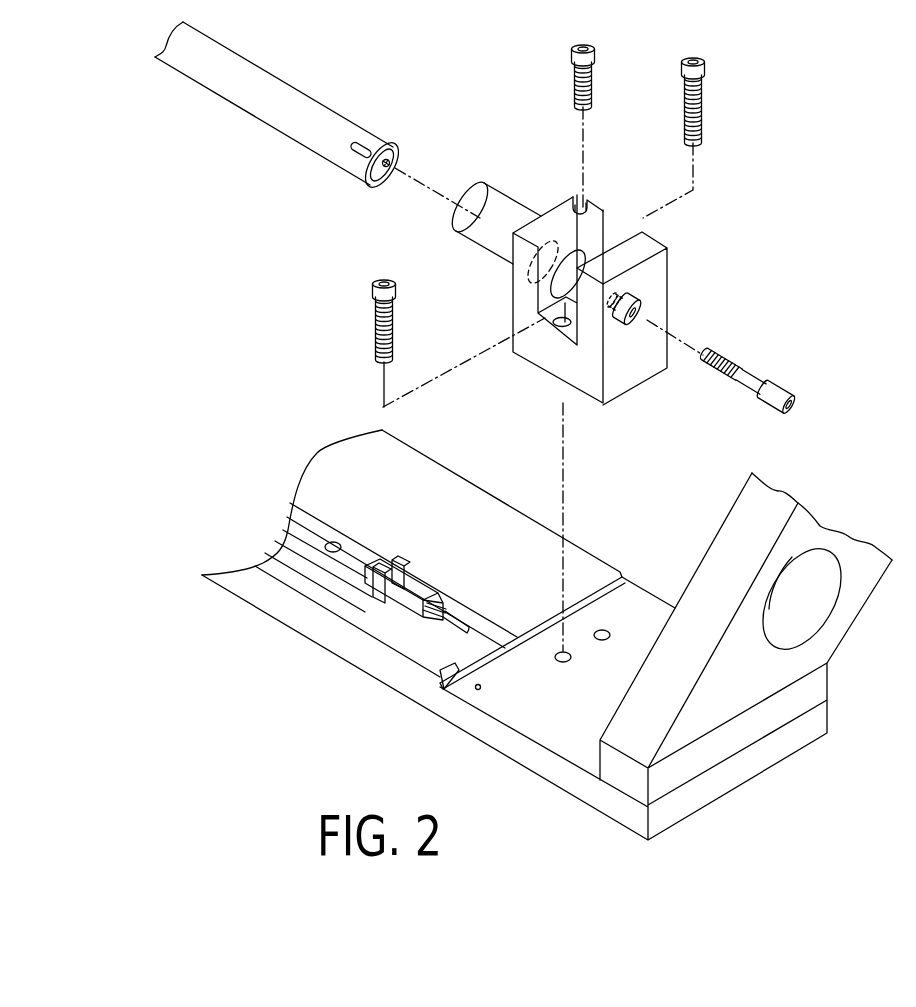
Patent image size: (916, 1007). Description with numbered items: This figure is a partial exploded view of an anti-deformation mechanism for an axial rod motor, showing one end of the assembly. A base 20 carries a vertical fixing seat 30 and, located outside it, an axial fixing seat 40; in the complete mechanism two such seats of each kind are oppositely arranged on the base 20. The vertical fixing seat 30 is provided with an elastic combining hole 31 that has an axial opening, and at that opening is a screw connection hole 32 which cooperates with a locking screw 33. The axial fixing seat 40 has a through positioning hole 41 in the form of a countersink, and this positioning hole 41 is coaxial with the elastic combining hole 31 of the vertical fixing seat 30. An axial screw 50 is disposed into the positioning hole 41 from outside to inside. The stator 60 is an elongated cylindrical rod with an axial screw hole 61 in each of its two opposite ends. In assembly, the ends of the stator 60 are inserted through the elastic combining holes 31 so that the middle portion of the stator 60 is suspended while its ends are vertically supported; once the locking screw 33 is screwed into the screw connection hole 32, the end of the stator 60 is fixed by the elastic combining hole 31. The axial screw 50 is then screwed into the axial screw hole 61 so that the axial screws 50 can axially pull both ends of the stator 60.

The base 20 is at (260, 640).
The vertical fixing seat 30 is at (503, 286).
The elastic combining hole 31 is at (568, 225).
The screw connection hole 32 is at (583, 210).
The locking screw 33 is at (570, 48).
The axial fixing seat 40 is at (682, 260).
The through positioning hole 41 is at (641, 308).
The axial screw 50 is at (800, 370).
The stator 60 is at (215, 110).
The axial screw hole 61 is at (392, 163).